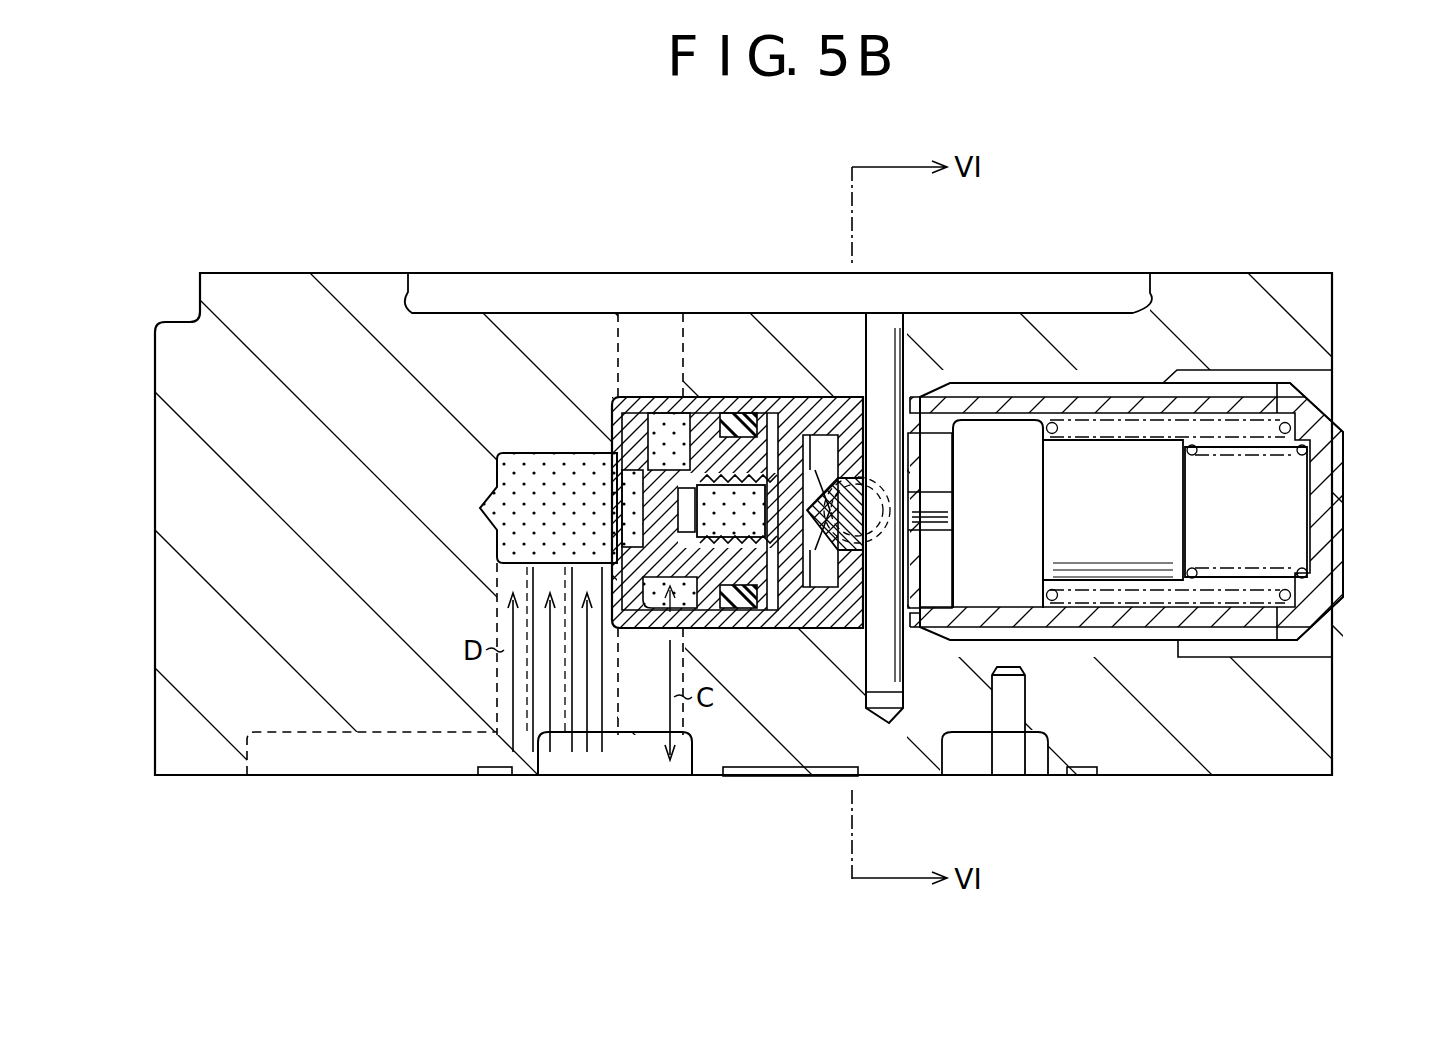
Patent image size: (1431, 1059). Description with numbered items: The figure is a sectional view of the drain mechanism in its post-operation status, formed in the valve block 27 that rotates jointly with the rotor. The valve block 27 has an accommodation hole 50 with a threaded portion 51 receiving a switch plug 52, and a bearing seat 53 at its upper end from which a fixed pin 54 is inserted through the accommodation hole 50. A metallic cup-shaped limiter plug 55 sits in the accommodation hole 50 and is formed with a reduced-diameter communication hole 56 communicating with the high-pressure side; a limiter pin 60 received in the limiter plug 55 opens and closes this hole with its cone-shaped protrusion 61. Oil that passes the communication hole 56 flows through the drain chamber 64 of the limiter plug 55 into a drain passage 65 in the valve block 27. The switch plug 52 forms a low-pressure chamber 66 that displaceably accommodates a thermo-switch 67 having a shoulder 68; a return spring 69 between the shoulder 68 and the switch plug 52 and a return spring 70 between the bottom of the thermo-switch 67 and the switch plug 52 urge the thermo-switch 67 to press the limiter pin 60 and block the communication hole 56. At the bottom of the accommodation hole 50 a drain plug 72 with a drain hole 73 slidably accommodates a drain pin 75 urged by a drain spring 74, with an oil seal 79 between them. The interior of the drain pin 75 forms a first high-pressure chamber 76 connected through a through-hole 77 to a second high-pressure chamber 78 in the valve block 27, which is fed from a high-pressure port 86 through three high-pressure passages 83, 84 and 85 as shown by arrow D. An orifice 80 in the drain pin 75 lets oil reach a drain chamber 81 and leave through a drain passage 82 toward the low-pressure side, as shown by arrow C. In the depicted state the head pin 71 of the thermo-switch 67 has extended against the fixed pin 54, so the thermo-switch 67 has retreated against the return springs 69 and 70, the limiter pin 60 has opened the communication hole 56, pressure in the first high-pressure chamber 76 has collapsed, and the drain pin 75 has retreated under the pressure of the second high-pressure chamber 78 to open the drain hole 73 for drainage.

The valve block 27 is at (205, 735).
The accommodation hole 50 is at (858, 735).
The threaded portion 51 is at (1145, 640).
The switch plug 52 is at (1258, 622).
The bearing seat 53 is at (1047, 295).
The fixed pin 54 is at (893, 357).
The limiter plug 55 is at (843, 407).
The communication hole 56 is at (797, 628).
The limiter pin 60 is at (833, 470).
The protrusion 61 is at (808, 470).
The drain chamber 64 is at (910, 650).
The drain passage 65 is at (960, 722).
The low-pressure chamber 66 is at (1237, 480).
The thermo-switch 67 is at (1115, 470).
The shoulder 68 is at (1090, 592).
The return spring 69 is at (1293, 593).
The return spring 70 is at (1305, 552).
The head pin 71 is at (1005, 600).
The drain plug 72 is at (657, 717).
The drain hole 73 is at (625, 528).
The drain spring 74 is at (645, 432).
The drain pin 75 is at (722, 478).
The first high-pressure chamber 76 is at (735, 628).
The through-hole 77 is at (632, 540).
The second high-pressure chamber 78 is at (500, 472).
The oil seal 79 is at (767, 628).
The orifice 80 is at (645, 558).
The drain chamber 81 is at (497, 592).
The drain passage 82 is at (665, 742).
The high-pressure passage 83 is at (507, 715).
The high-pressure passage 84 is at (542, 713).
The high-pressure passage 85 is at (593, 710).
The high-pressure port 86 is at (575, 762).